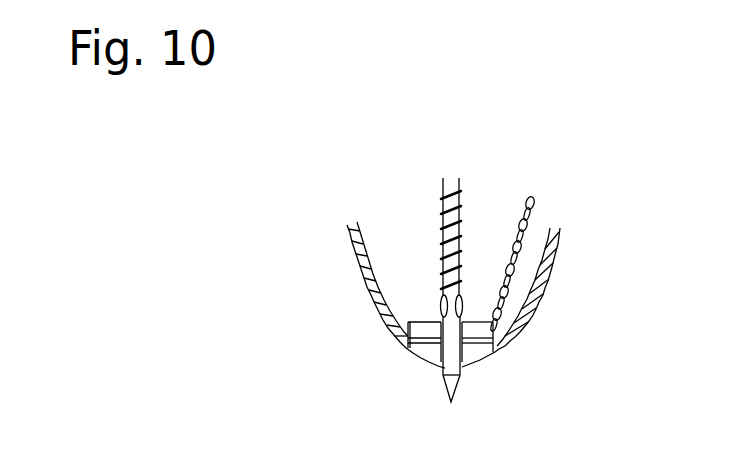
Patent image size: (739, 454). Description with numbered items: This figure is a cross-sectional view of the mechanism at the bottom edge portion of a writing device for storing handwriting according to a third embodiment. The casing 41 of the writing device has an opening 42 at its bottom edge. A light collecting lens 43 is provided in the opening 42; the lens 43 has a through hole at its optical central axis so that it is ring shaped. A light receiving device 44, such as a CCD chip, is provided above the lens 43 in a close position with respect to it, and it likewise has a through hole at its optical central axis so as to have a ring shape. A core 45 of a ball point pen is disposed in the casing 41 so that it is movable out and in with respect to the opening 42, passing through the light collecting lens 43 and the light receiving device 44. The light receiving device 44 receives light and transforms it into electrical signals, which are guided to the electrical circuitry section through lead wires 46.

The casing 41 is at (364, 284).
The opening 42 is at (497, 343).
The light collecting lens 43 is at (474, 355).
The light receiving device 44 is at (405, 339).
The core 45 is at (449, 190).
The lead wires 46 is at (508, 270).